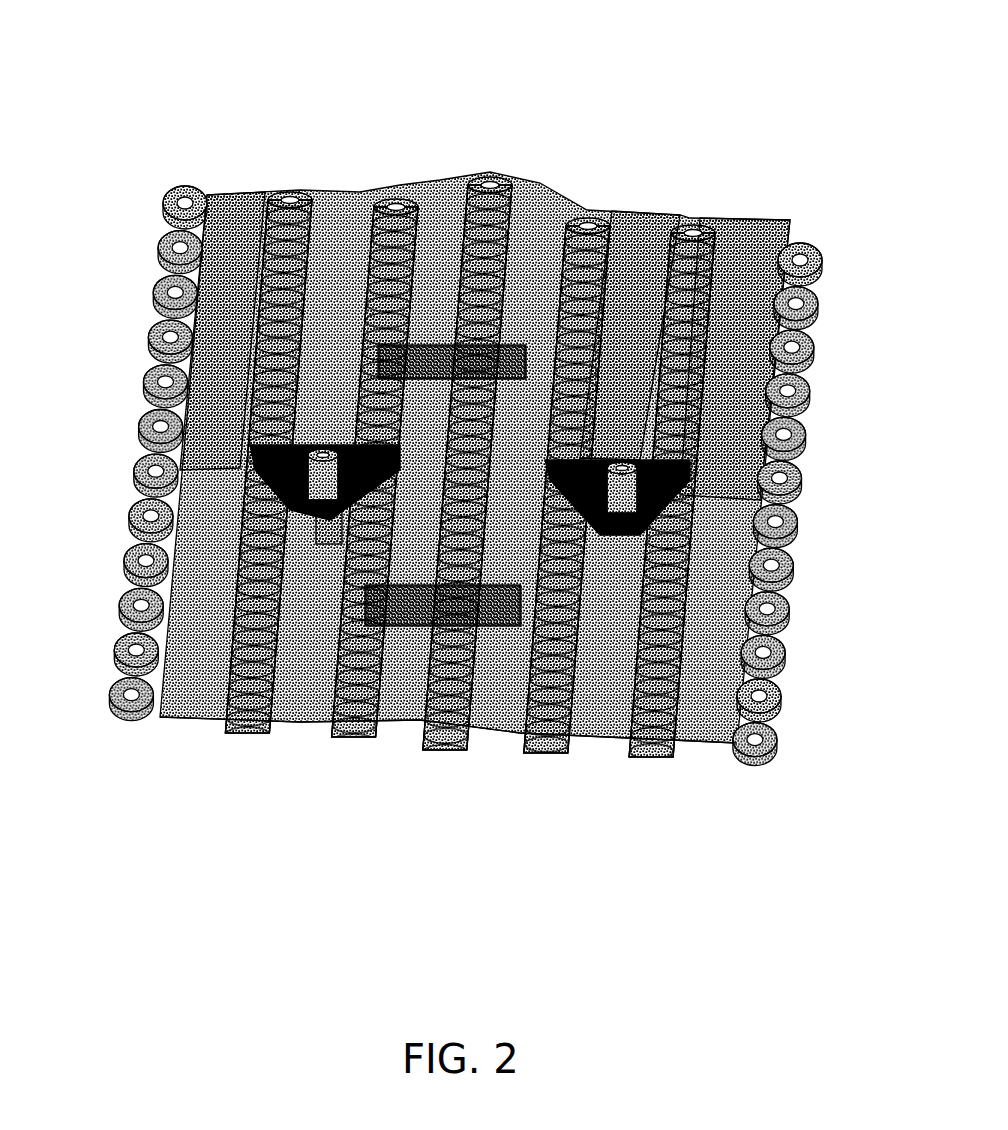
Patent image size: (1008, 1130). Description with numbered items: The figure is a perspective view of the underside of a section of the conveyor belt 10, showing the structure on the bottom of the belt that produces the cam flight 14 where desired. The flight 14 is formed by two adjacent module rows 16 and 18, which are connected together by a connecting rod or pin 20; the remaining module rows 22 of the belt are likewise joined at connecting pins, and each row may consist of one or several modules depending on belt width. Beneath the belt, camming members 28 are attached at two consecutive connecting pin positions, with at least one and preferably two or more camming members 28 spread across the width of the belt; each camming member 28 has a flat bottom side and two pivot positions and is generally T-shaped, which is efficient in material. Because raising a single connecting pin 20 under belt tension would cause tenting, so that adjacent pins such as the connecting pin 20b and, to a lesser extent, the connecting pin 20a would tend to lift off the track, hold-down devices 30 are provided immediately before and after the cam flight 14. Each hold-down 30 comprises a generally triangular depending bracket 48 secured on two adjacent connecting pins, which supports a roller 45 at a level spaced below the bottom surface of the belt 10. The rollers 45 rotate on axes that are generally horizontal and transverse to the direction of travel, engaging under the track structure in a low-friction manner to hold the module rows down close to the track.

The conveyor belt 10 is at (648, 152).
The product-engaging flight 14 is at (512, 96).
The module row 16 is at (408, 713).
The module row 18 is at (492, 728).
The connecting pin 20 is at (494, 183).
The connecting pin 20a is at (398, 203).
The connecting pin 20b is at (590, 210).
The remaining module rows 22 is at (328, 185).
The camming member 28 is at (415, 200).
The hold-down device 30 is at (695, 512).
The roller 45 is at (300, 438).
The depending bracket 48 is at (290, 480).